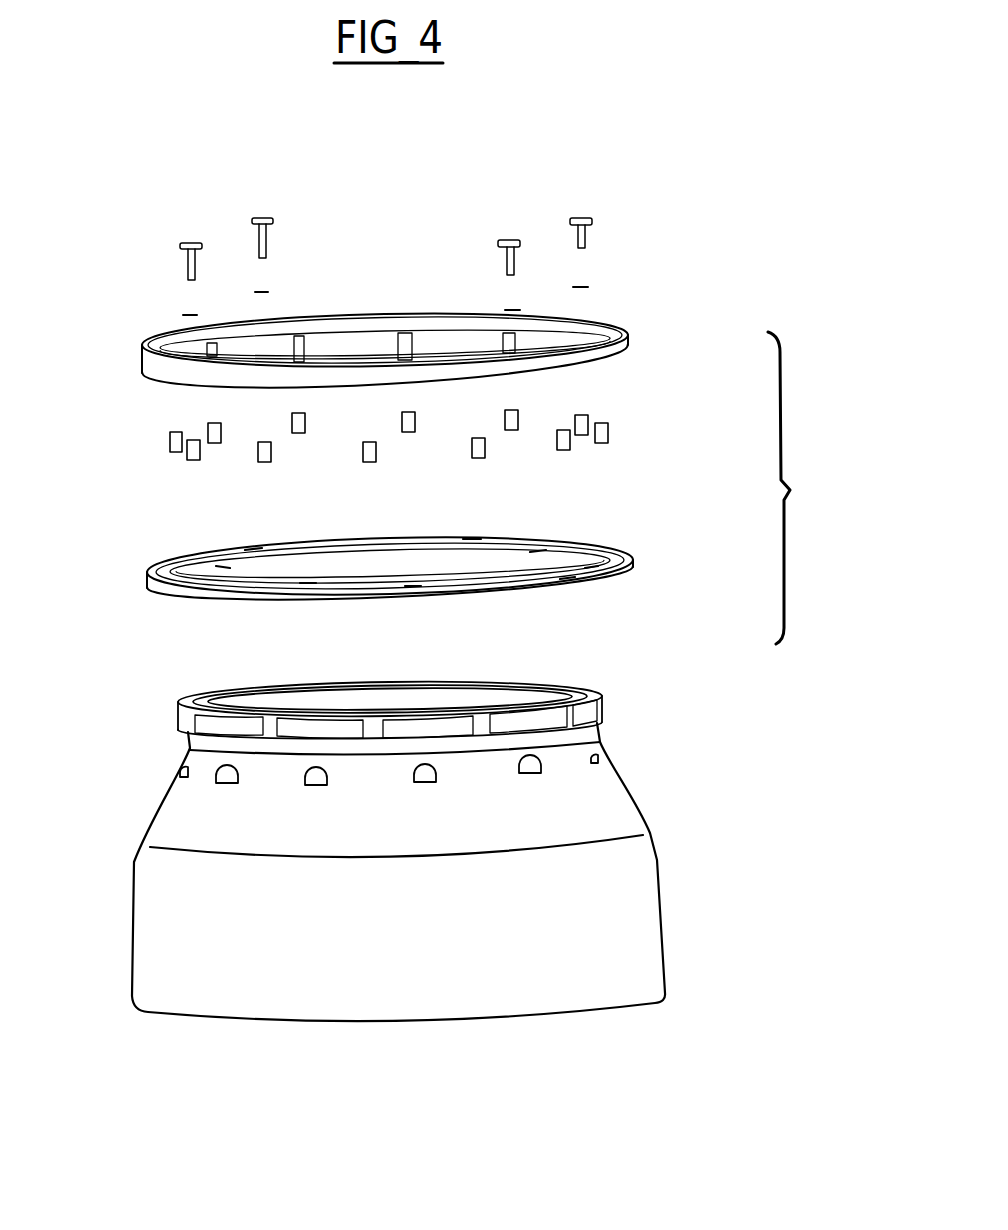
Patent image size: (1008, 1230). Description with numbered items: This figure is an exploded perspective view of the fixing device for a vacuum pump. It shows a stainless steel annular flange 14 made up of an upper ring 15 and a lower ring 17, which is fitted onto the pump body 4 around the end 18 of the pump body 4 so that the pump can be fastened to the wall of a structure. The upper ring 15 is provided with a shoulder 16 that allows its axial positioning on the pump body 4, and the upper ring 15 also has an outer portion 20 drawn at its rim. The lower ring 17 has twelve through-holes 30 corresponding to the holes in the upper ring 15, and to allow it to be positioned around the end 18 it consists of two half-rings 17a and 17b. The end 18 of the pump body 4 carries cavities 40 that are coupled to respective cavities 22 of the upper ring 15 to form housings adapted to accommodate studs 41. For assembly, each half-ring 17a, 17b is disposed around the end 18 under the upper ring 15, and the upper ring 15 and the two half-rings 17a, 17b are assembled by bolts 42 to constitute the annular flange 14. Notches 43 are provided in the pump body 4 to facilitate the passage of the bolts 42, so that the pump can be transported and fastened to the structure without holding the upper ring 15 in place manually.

The pump body 4 is at (667, 903).
The annular flange 14 is at (800, 488).
The upper ring 15 is at (630, 343).
The shoulder 16 is at (463, 327).
The lower ring 17 is at (610, 578).
The half-ring 17a is at (188, 592).
The half-ring 17b is at (635, 562).
The end of the pump body 18 is at (593, 712).
The outer lip 20 is at (612, 327).
The cavities 22 is at (296, 337).
The through-holes 30 is at (473, 537).
The cavities 40 is at (267, 727).
The studs 41 is at (185, 453).
The bolts 42 is at (587, 233).
The notches 43 is at (222, 776).